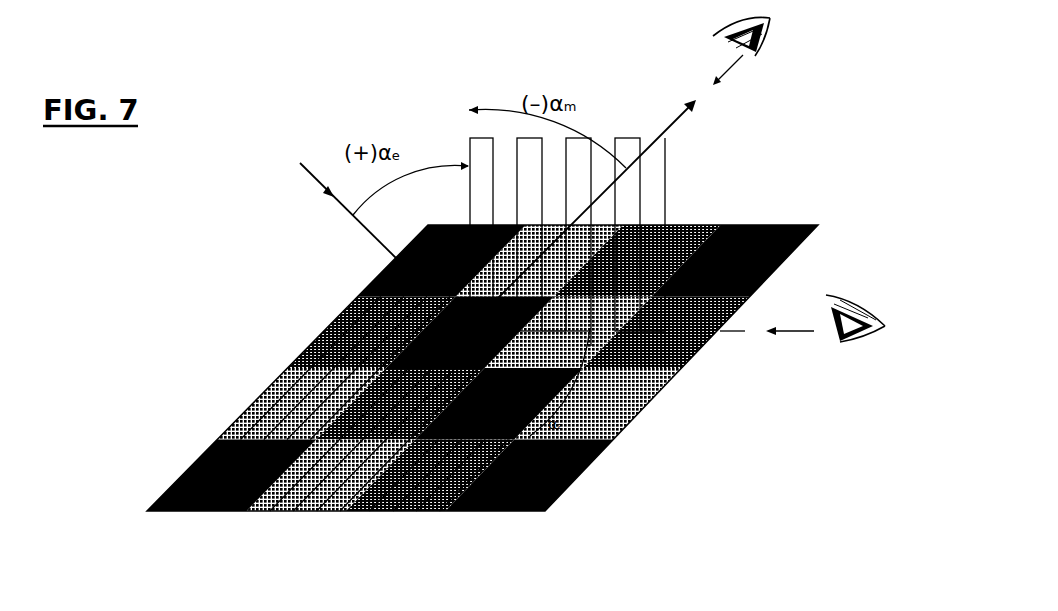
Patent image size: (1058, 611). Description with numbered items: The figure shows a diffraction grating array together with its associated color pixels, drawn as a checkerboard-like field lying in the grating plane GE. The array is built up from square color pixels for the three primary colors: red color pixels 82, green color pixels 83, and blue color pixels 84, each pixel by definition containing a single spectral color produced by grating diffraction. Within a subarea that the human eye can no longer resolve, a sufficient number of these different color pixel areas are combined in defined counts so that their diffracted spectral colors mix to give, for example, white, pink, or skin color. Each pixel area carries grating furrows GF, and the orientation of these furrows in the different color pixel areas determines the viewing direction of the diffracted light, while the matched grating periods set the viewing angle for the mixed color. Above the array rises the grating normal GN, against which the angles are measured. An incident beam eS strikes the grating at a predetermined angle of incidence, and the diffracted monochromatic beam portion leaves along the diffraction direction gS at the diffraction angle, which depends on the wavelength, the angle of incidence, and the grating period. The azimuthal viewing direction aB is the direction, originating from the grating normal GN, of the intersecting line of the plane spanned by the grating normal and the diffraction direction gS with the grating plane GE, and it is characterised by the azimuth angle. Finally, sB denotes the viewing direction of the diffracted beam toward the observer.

The red color pixel 82 is at (207, 498).
The green color pixel 83 is at (305, 478).
The blue color pixel 84 is at (413, 470).
The grating plane GE is at (482, 335).
The grating furrows GF is at (215, 430).
The grating normal GN is at (461, 217).
The incident beam eS is at (335, 201).
The diffraction direction gS is at (597, 199).
The viewing direction of the diffracted beam sB is at (741, 51).
The azimuthal viewing direction aB is at (802, 318).